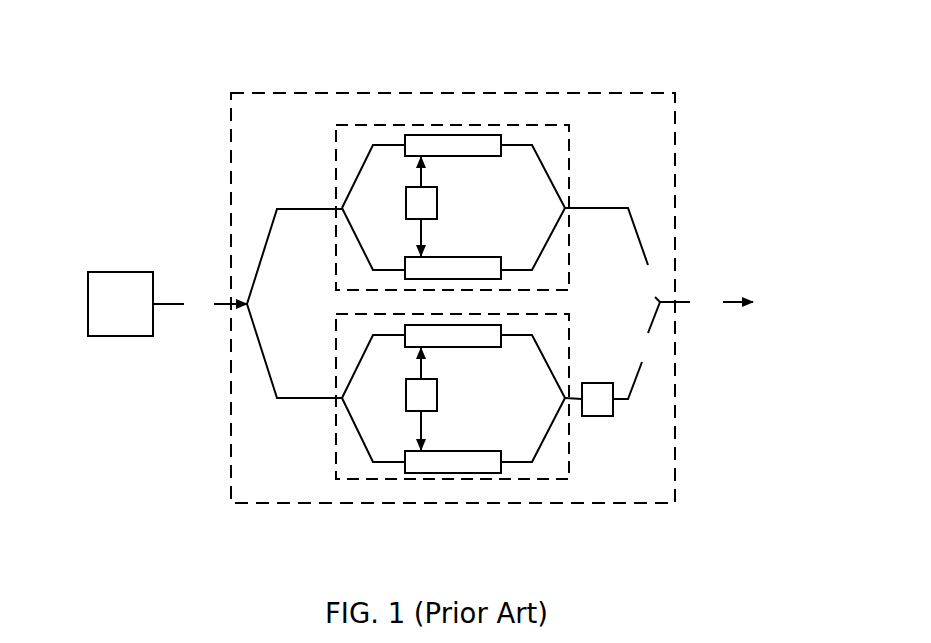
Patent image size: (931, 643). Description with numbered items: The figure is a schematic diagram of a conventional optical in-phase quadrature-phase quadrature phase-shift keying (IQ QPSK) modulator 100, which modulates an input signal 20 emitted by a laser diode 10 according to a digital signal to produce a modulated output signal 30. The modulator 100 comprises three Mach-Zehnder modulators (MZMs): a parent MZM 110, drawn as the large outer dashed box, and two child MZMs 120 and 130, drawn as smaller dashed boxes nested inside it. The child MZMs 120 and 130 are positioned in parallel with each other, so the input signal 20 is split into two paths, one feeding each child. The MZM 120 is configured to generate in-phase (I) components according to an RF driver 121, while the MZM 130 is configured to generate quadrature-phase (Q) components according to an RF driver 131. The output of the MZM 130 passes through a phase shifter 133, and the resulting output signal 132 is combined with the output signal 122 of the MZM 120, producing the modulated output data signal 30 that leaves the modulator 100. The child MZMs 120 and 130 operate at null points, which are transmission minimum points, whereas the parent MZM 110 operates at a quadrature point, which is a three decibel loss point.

The laser diode 10 is at (120, 304).
The input signal 20 is at (200, 304).
The modulated output signal 30 is at (706, 302).
The IQ QPSK modulator 100 is at (150, 108).
The parent MZM 110 is at (675, 173).
The first child MZM 120 is at (538, 165).
The RF driver 121 is at (451, 206).
The output signal of MZM 120 122 is at (618, 255).
The second child MZM 130 is at (524, 443).
The RF driver 131 is at (451, 399).
The output signal of MZM 130 132 is at (642, 350).
The phase shifter 133 is at (594, 414).